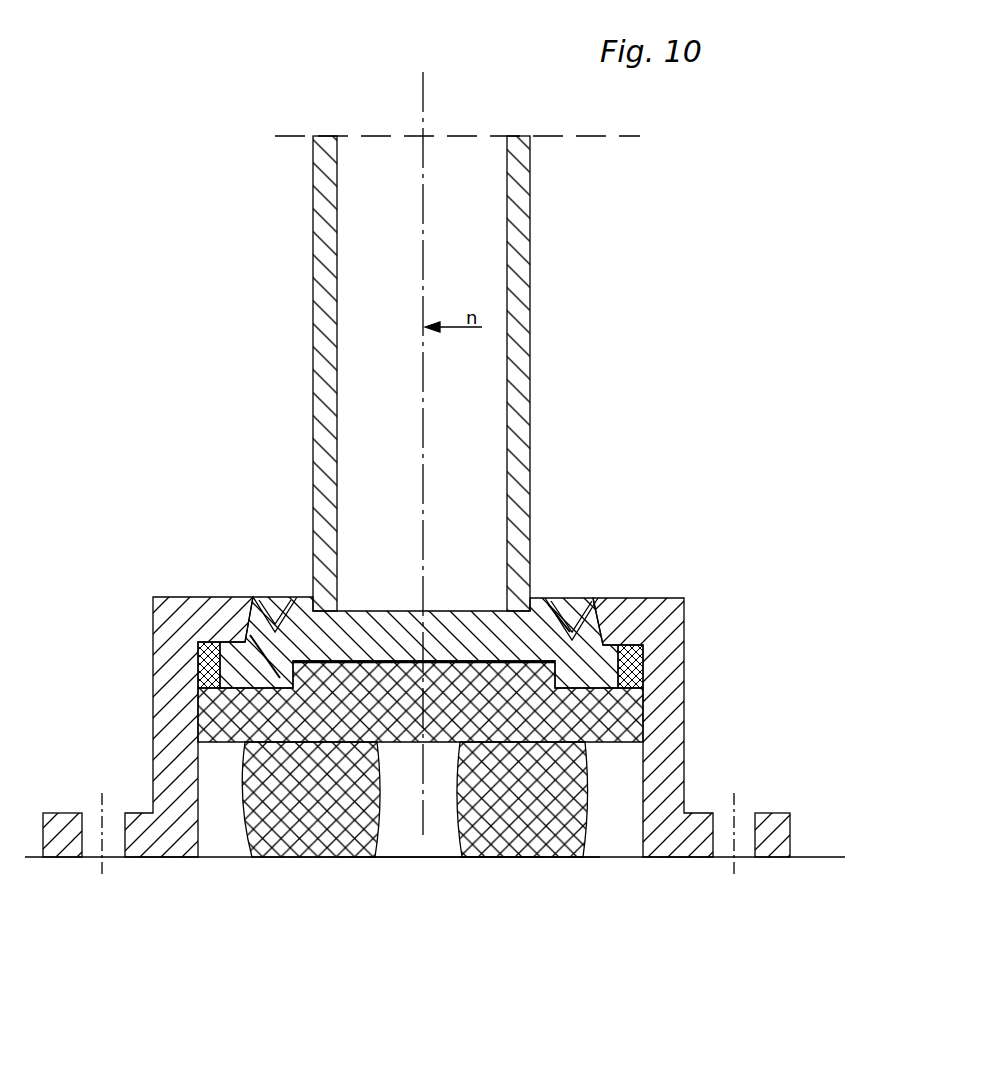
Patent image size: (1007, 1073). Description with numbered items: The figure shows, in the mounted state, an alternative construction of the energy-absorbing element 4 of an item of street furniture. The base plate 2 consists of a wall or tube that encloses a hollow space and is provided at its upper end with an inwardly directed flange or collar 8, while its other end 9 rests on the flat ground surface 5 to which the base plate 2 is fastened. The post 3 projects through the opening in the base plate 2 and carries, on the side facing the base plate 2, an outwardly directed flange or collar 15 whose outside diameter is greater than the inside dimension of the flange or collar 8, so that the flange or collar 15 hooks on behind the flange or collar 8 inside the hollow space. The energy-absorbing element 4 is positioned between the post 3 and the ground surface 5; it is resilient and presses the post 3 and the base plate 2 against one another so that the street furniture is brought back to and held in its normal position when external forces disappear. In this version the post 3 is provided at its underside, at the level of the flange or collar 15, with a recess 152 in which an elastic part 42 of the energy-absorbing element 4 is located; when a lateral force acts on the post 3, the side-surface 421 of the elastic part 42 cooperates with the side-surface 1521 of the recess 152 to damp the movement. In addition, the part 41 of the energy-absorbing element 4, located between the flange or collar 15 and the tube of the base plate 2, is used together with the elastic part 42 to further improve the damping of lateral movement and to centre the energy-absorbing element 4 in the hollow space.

The base plate 2 is at (733, 727).
The post 3 is at (515, 173).
The energy-absorbing element 4 is at (541, 858).
The ground surface 5 is at (440, 878).
The inwardly directed flange or collar 8 is at (632, 625).
The other end 9 is at (665, 888).
The outwardly directed flange or collar 15 is at (510, 560).
The part of the energy-absorbing element 41 is at (627, 669).
The elastic part 42 is at (486, 629).
The recess 152 is at (660, 586).
The side-surface of the elastic part 421 is at (318, 664).
The side-surface of the recess 1521 is at (277, 678).